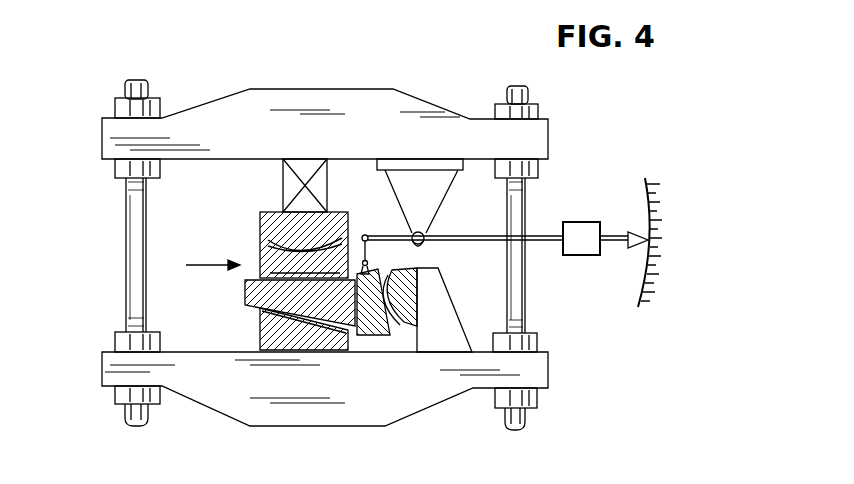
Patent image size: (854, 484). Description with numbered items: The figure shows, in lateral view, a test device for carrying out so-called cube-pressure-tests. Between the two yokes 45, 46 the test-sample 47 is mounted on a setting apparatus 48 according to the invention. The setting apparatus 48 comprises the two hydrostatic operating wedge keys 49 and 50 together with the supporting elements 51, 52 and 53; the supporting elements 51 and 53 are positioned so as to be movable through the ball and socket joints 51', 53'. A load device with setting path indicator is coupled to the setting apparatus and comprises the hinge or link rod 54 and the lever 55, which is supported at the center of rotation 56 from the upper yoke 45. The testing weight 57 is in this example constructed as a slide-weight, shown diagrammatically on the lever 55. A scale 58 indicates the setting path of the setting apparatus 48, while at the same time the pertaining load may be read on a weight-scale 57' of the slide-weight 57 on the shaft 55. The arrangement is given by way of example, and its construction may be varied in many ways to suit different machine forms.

The yoke 45 is at (325, 108).
The yoke 46 is at (302, 405).
The test sample 47 is at (283, 181).
The setting apparatus 48 is at (197, 265).
The hydrostatic operating wedge key 49 is at (250, 292).
The hydrostatic operating wedge key 50 is at (370, 338).
The supporting element 51 is at (279, 245).
The ball and socket joint 51' is at (281, 229).
The supporting element 52 is at (268, 330).
The supporting element 53 is at (401, 324).
The ball and socket joint 53' is at (442, 310).
The hinge or link rod 54 is at (363, 233).
The lever 55 is at (546, 236).
The center of rotation 56 is at (428, 232).
The testing weight 57 is at (581, 265).
The weight-scale 57' is at (623, 213).
The scale 58 is at (656, 212).